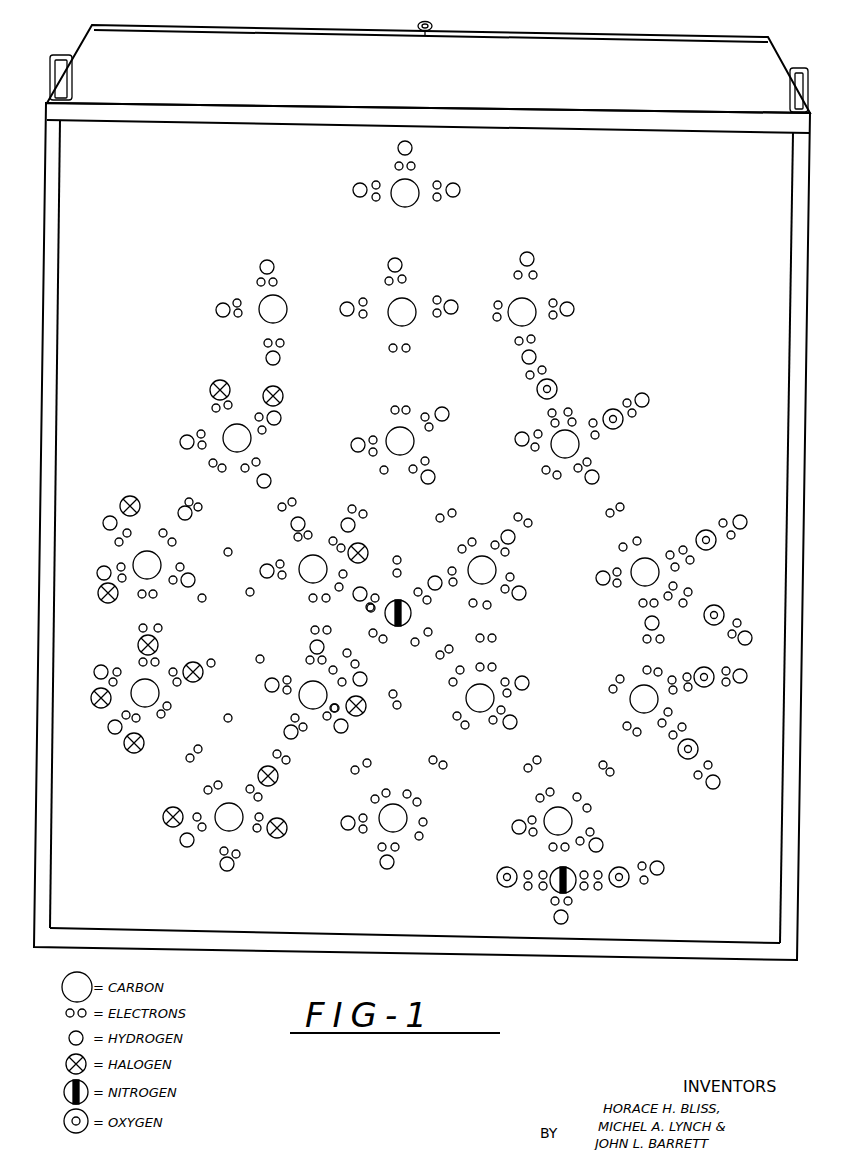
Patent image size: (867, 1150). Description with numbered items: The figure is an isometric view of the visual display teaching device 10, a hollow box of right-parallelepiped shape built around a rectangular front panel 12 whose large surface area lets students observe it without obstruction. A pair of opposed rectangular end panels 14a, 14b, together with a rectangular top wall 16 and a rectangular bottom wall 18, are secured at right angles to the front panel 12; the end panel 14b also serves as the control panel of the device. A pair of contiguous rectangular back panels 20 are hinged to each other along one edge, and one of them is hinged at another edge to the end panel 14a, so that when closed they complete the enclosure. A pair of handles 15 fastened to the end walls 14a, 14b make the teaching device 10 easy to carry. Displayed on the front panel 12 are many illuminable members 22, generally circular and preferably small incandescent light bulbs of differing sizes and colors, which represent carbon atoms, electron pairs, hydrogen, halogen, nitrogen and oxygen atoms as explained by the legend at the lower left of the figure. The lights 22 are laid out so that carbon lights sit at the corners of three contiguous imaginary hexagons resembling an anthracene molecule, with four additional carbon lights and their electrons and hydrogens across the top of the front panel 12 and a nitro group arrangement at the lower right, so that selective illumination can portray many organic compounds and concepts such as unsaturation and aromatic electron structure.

The visual display teaching device 10 is at (795, 62).
The front panel 12 is at (606, 189).
The end panel 14a is at (58, 308).
The end panel 14b is at (798, 280).
The handle 15 is at (63, 55).
The top wall 16 is at (433, 79).
The bottom wall 18 is at (437, 951).
The back panel 20 is at (283, 27).
The illuminable member 22 is at (657, 410).